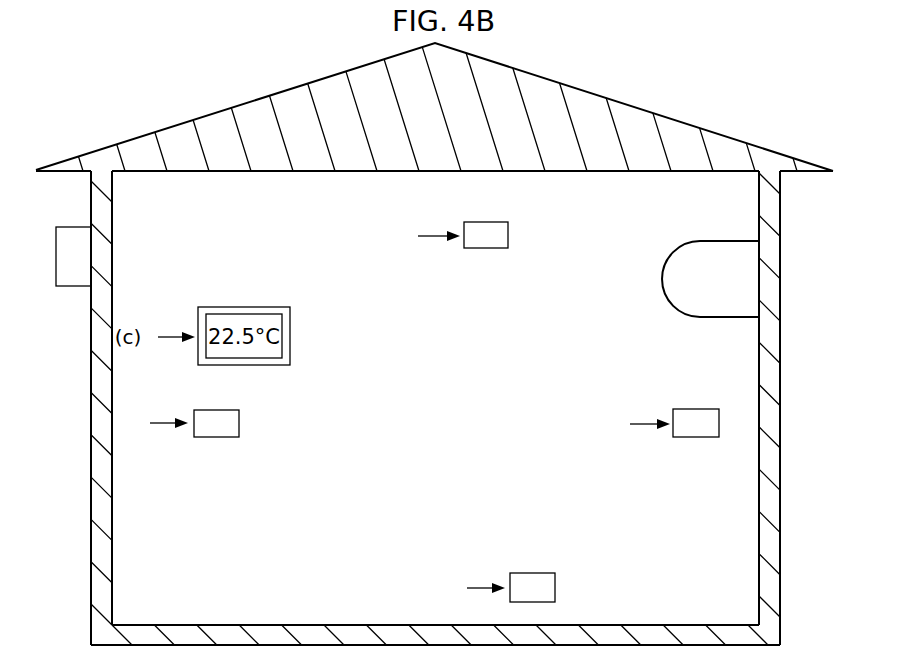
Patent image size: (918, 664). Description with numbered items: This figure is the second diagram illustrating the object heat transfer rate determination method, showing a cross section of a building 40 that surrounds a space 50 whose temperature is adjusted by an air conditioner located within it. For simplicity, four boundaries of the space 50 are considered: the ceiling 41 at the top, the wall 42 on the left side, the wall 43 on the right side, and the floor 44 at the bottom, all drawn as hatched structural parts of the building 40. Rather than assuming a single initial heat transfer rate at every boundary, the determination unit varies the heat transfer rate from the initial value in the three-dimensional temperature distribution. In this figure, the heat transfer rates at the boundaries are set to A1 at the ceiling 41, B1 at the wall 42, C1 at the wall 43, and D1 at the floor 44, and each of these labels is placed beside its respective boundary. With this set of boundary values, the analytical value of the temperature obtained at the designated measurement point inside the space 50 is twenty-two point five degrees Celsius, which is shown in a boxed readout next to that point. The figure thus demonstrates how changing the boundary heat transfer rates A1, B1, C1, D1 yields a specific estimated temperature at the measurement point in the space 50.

The building 40 is at (653, 125).
The ceiling 41 is at (430, 154).
The wall 42 is at (107, 395).
The wall 43 is at (767, 366).
The floor 44 is at (439, 633).
The space 50 is at (402, 401).
The heat transfer rate at ceiling A1 is at (463, 235).
The heat transfer rate at wall B1 is at (194, 423).
The heat transfer rate at wall C1 is at (674, 423).
The heat transfer rate at floor D1 is at (511, 587).